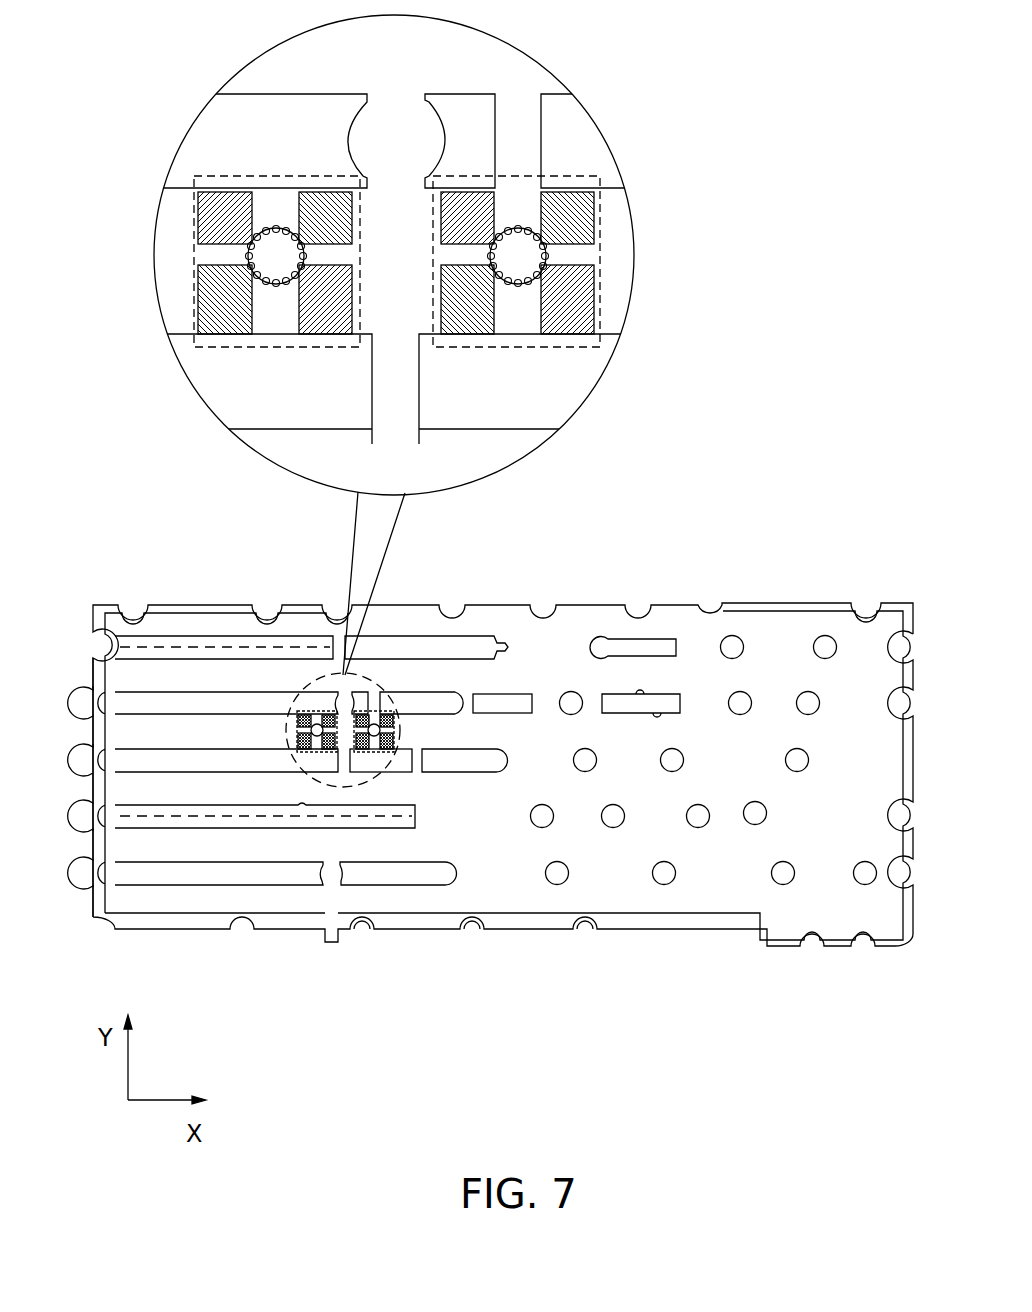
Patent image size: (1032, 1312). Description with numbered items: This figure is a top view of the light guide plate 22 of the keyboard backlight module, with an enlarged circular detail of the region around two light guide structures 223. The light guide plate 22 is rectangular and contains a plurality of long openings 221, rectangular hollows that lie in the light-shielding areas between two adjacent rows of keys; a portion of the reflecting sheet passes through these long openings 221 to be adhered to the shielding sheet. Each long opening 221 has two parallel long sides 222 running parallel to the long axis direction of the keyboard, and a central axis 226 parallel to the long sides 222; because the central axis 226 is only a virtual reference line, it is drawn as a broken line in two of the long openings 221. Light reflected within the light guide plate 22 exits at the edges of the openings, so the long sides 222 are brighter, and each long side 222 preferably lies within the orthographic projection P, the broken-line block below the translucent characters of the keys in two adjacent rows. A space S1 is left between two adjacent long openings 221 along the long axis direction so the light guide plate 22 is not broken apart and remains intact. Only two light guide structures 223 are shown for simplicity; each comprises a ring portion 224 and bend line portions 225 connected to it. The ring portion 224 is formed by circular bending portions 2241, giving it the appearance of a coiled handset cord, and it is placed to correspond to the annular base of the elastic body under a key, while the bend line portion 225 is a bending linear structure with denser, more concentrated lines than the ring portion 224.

The light guide plate 22 is at (300, 52).
The long opening 221 is at (218, 133).
The long side 222 is at (200, 187).
The light guide structure 223 is at (186, 213).
The ring portion 224 is at (249, 256).
The bending portion 2241 is at (546, 259).
The bend line portion 225 is at (197, 310).
The central axis 226 is at (130, 647).
The orthographic projection P is at (184, 239).
The space S1 is at (451, 444).